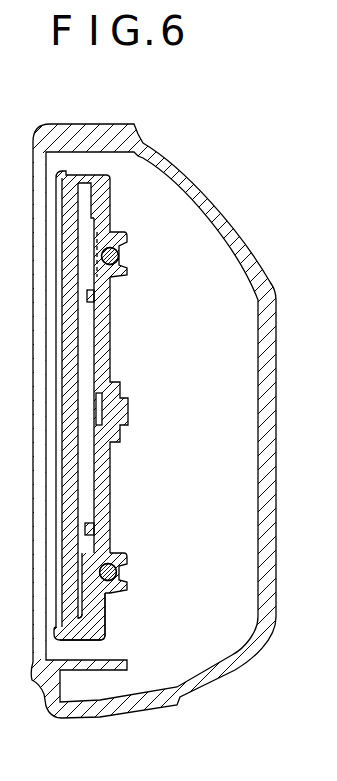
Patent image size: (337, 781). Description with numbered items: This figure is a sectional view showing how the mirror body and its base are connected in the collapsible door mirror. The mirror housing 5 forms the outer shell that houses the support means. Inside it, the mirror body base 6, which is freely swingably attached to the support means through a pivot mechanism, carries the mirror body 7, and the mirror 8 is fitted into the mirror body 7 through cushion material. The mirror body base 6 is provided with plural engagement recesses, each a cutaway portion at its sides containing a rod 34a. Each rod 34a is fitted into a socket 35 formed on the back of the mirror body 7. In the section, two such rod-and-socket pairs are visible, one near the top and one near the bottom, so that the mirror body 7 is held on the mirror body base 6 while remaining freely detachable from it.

The mirror housing 5 is at (268, 373).
The mirror body base 6 is at (110, 470).
The mirror body 7 is at (110, 618).
The mirror 8 is at (62, 402).
The rod 34a is at (119, 257).
The socket 35 is at (121, 235).